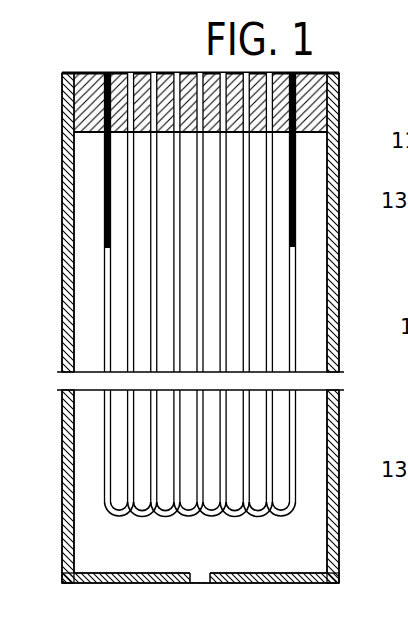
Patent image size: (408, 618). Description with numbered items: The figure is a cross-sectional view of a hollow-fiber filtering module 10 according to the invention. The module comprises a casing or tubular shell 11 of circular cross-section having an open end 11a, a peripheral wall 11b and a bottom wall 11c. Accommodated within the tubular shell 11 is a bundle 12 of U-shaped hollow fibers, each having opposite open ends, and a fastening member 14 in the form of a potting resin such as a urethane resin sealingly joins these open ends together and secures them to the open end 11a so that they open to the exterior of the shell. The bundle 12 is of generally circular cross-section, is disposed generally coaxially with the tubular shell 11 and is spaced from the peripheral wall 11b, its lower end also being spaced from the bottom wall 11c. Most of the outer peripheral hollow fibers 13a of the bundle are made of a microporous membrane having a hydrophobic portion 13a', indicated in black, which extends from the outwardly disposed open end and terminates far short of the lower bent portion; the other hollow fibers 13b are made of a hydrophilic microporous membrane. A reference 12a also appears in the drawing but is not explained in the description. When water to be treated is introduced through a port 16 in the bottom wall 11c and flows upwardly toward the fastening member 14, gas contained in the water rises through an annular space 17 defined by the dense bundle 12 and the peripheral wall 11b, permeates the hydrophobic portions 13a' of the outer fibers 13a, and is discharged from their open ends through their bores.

The hollow-fiber filtering module 10 is at (215, 328).
The tubular shell 11 is at (215, 328).
The open end 11a is at (74, 122).
The peripheral wall 11b is at (338, 357).
The bottom wall 11c is at (233, 572).
The bundle 12 is at (104, 281).
The outlet passage 12a is at (349, 267).
The outer peripheral hollow fibers 13a is at (206, 313).
The hydrophobic portion 13a' is at (206, 160).
The hollow fibers 13b is at (132, 318).
The fastening member 14 is at (320, 99).
The port 16 is at (198, 573).
The annular space 17 is at (87, 349).